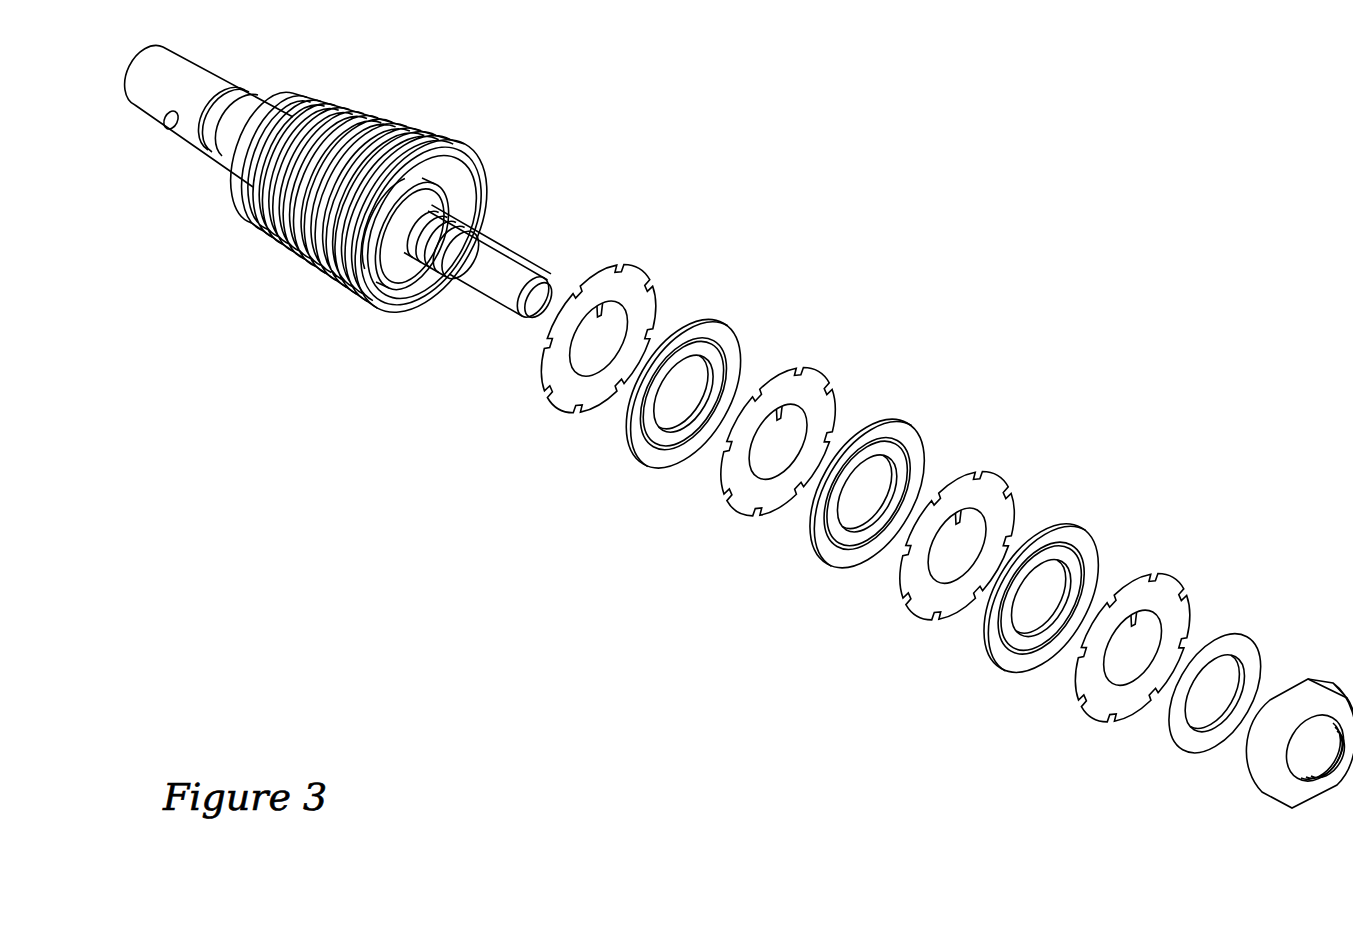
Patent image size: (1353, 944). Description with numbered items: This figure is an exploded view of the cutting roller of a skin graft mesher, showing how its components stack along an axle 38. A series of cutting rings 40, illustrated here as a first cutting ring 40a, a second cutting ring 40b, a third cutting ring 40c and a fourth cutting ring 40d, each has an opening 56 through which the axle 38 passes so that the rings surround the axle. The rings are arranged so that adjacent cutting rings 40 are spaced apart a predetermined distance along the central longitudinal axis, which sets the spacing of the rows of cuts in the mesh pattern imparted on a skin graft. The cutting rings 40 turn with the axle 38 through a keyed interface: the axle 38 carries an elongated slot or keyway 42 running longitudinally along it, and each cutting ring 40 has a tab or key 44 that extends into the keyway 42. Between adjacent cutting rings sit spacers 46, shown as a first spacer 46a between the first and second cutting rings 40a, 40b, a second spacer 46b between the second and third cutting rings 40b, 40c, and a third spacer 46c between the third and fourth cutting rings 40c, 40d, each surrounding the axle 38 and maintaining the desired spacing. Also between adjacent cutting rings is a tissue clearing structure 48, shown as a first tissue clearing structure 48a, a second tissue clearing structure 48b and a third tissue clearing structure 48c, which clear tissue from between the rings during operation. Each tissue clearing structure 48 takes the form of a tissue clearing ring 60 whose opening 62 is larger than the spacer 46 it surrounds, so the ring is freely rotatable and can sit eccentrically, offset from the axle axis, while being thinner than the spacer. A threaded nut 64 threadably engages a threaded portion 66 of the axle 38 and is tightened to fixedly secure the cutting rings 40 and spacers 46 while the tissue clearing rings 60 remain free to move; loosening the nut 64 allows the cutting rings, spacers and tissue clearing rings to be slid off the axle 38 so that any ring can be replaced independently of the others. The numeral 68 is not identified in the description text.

The axle 38 is at (258, 112).
The cutting rings 40 is at (375, 290).
The first cutting ring 40a is at (1086, 702).
The second cutting ring 40b is at (921, 606).
The third cutting ring 40c is at (742, 497).
The fourth cutting ring 40d is at (564, 400).
The keyway 42 is at (458, 205).
The key 44 is at (598, 316).
The spacers 46 is at (404, 270).
The first spacer 46a is at (1074, 564).
The second spacer 46b is at (855, 536).
The third spacer 46c is at (717, 365).
The tissue clearing structure 48 is at (470, 178).
The first tissue clearing structure 48a is at (997, 650).
The second tissue clearing structure 48b is at (828, 527).
The third tissue clearing structure 48c is at (640, 448).
The opening 56 is at (616, 318).
The tissue clearing ring 60 is at (445, 162).
The opening 62 is at (665, 442).
The threaded nut 64 is at (1277, 787).
The threaded portion 66 is at (500, 228).
The flat washer 68 is at (1187, 740).